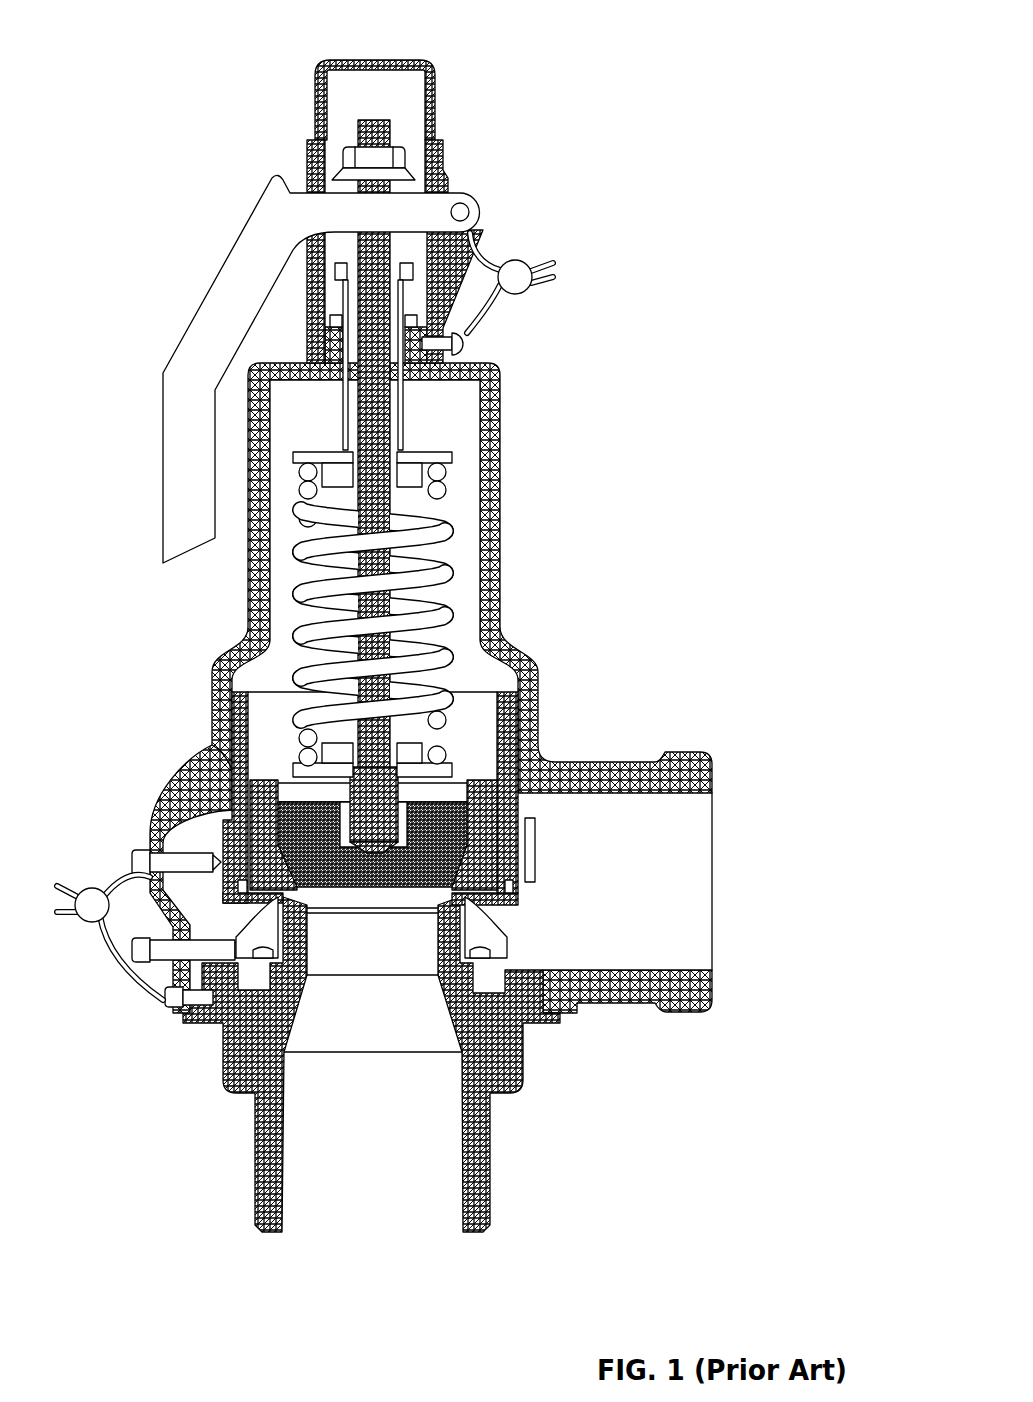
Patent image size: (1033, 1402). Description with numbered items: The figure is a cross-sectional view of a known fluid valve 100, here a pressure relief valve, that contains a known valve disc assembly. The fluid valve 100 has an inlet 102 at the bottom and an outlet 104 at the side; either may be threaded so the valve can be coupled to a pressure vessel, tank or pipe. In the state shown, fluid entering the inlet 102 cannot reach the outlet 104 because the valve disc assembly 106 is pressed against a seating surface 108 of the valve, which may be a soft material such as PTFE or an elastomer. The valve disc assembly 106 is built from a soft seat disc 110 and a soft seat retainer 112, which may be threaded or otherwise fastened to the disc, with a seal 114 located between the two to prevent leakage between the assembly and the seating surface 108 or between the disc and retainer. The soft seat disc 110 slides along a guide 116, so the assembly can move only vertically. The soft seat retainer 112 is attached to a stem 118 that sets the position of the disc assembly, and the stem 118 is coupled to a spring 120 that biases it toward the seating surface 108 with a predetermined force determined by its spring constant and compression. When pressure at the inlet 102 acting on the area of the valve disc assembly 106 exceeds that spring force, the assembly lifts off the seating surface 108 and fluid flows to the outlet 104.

The fluid valve 100 is at (704, 52).
The inlet 102 is at (372, 1232).
The outlet 104 is at (712, 900).
The valve disc assembly 106 is at (275, 765).
The seating surface 108 is at (460, 897).
The soft seat disc 110 is at (232, 787).
The soft seat retainer 112 is at (235, 822).
The seal 114 is at (296, 900).
The guide 116 is at (512, 722).
The stem 118 is at (378, 438).
The spring 120 is at (412, 538).